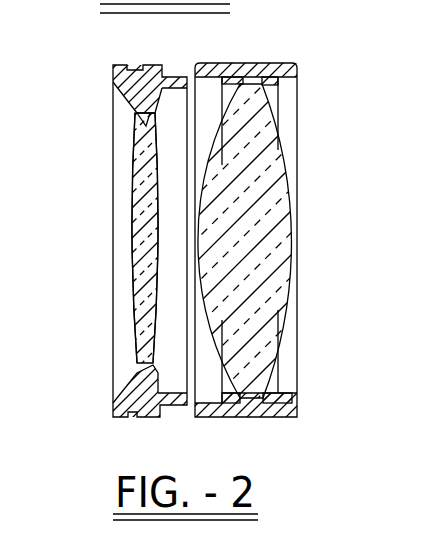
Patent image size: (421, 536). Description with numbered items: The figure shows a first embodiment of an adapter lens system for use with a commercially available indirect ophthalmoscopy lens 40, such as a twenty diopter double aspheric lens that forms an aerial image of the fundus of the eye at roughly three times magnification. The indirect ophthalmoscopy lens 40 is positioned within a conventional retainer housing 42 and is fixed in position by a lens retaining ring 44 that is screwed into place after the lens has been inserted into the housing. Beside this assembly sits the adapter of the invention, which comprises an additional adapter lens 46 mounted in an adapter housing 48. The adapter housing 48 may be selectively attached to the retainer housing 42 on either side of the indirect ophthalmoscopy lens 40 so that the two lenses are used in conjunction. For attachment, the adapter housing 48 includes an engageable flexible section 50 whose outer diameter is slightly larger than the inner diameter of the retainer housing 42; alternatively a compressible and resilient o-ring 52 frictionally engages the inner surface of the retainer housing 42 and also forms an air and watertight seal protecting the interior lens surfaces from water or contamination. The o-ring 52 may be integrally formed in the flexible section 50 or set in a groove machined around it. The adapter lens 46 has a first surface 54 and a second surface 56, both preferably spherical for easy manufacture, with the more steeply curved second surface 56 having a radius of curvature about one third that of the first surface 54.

The indirect ophthalmoscopy lens 40 is at (298, 155).
The retainer housing 42 is at (283, 398).
The lens retaining ring 44 is at (203, 402).
The adapter lens 46 is at (122, 243).
The adapter housing 48 is at (128, 380).
The engageable flexible section 50 is at (173, 412).
The o-ring 52 is at (174, 77).
The first surface 54 is at (127, 209).
The second surface 56 is at (164, 206).